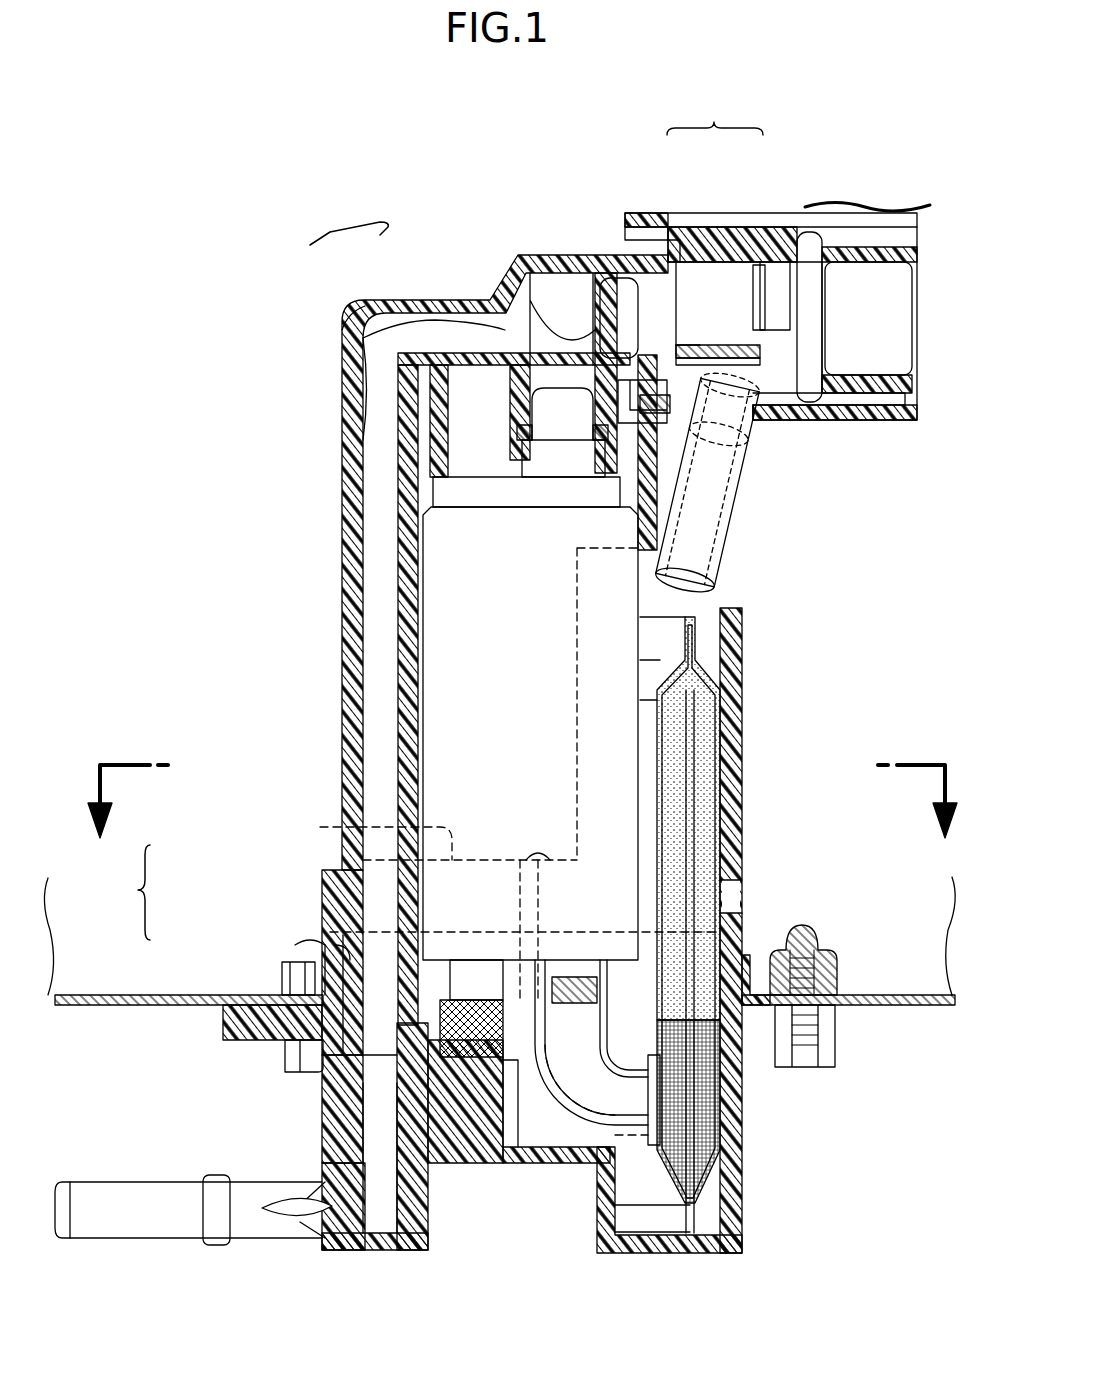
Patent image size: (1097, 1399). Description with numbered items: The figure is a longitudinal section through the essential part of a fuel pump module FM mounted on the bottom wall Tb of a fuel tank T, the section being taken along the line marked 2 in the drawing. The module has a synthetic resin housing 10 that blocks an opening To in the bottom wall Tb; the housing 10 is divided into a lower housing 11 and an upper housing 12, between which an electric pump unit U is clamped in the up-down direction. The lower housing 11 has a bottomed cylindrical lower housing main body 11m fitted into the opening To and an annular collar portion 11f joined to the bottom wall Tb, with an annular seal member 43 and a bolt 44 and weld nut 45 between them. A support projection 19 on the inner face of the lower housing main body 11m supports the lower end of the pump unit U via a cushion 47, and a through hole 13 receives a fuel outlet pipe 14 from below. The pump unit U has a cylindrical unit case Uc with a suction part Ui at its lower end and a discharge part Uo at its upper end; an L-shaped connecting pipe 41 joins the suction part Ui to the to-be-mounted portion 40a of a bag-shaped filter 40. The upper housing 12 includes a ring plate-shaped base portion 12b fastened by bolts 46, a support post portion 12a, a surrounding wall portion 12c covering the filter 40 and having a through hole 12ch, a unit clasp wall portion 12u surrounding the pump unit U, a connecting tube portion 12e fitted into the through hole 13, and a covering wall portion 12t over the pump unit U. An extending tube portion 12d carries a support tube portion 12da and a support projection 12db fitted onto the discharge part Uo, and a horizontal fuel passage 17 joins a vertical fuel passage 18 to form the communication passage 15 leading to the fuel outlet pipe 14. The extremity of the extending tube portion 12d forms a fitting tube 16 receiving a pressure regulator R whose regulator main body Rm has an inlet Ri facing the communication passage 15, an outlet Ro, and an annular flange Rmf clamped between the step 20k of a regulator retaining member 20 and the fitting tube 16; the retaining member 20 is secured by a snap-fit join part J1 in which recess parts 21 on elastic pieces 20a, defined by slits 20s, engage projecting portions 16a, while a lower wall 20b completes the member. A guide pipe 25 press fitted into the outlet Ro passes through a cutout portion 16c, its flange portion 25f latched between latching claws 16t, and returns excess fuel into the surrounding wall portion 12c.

The housing 10 is at (128, 892).
The lower housing 11 is at (332, 1121).
The annular collar portion 11f is at (840, 1037).
The lower housing main body 11m is at (533, 1165).
The upper housing 12 is at (509, 693).
The support post portion 12a is at (340, 608).
The base portion 12b is at (340, 833).
The surrounding wall portion 12c is at (745, 742).
The through hole 12ch is at (730, 897).
The extending tube portion 12d is at (562, 252).
The support tube portion 12da is at (498, 440).
The support projection 12db is at (445, 482).
The connecting tube portion 12e is at (440, 990).
The covering wall portion 12t is at (708, 483).
The unit clasp wall portion 12u is at (580, 742).
The through hole 13 is at (345, 1120).
The fuel outlet pipe 14 is at (150, 1225).
The communication passage 15 is at (349, 227).
The fitting tube 16 is at (759, 312).
The projecting portion 16a is at (678, 230).
The cutout portion 16c is at (778, 412).
The latching claws 16t is at (688, 412).
The horizontal fuel passage 17 is at (432, 318).
The vertical fuel passage 18 is at (352, 314).
The support projection 19 is at (470, 1110).
The regulator retaining member 20 is at (770, 339).
The elastic pieces 20a is at (645, 213).
The fitting lower wall 20b is at (855, 420).
The step 20k is at (822, 237).
The slits 20s is at (640, 402).
The recess part 21 is at (723, 226).
The guide pipe 25 is at (780, 503).
The flange portion 25f is at (735, 398).
The filter 40 is at (722, 934).
The to-be-mounted portion 40a is at (652, 1058).
The connecting pipe 41 is at (592, 1140).
The annular seal member 43 is at (755, 1010).
The bolt 44 is at (805, 1068).
The weld nut 45 is at (815, 948).
The bolts 46 is at (538, 848).
The cushion 47 is at (509, 1055).
The snap-fit join part J1 is at (715, 115).
The pressure regulator R is at (920, 342).
The inlet Ri is at (588, 270).
The regulator main body Rm is at (853, 340).
The annular flange Rmf is at (812, 310).
The outlet Ro is at (745, 450).
The pump unit U is at (611, 809).
The unit case Uc is at (490, 690).
The suction part Ui is at (592, 1000).
The discharge part Uo is at (565, 470).
The fuel pump module FM is at (290, 428).
The fuel tank T is at (499, 995).
The bottom wall Tb is at (100, 995).
The opening To is at (328, 955).
The section line 2 is at (522, 779).